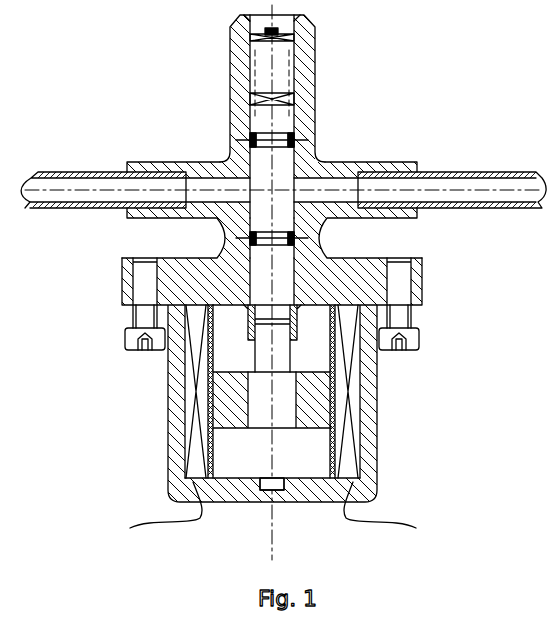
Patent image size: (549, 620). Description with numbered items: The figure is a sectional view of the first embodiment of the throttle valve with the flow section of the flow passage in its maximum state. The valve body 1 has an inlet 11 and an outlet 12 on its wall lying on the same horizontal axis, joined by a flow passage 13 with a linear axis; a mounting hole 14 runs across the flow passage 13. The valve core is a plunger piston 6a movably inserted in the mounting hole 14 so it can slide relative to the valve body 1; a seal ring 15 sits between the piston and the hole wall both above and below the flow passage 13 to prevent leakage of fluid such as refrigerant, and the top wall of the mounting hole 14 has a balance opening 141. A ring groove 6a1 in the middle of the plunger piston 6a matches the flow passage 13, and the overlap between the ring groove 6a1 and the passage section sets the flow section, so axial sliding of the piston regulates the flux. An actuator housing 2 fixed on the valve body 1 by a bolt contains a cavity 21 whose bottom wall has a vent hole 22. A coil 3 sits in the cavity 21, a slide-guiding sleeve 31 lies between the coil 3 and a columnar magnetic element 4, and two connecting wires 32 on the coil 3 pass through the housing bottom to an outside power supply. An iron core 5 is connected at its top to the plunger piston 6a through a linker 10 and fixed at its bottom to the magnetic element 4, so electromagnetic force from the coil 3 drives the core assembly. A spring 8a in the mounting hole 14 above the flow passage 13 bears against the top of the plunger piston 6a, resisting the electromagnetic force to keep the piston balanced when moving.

The valve body 1 is at (308, 88).
The actuator housing 2 is at (178, 325).
The coil 3 is at (188, 408).
The magnetic element 4 is at (312, 405).
The iron core 5 is at (280, 357).
The plunger piston 6a is at (281, 273).
The ring groove 6a1 is at (296, 238).
The spring 8a is at (266, 28).
The linker 10 is at (404, 350).
The inlet 11 is at (142, 187).
The outlet 12 is at (402, 190).
The flow passage 13 is at (200, 192).
The mounting hole 14 is at (262, 58).
The balance opening 141 is at (282, 28).
The seal ring 15 is at (298, 139).
The cavity 21 is at (237, 452).
The vent hole 22 is at (282, 486).
The slide-guiding sleeve 31 is at (143, 350).
The connecting wires 32 is at (130, 528).